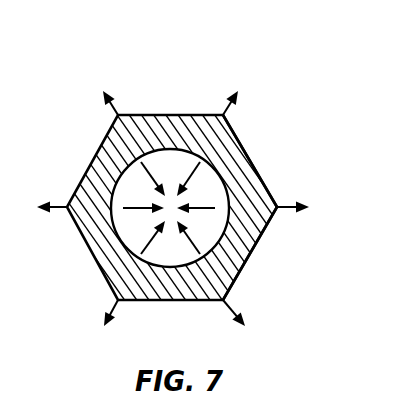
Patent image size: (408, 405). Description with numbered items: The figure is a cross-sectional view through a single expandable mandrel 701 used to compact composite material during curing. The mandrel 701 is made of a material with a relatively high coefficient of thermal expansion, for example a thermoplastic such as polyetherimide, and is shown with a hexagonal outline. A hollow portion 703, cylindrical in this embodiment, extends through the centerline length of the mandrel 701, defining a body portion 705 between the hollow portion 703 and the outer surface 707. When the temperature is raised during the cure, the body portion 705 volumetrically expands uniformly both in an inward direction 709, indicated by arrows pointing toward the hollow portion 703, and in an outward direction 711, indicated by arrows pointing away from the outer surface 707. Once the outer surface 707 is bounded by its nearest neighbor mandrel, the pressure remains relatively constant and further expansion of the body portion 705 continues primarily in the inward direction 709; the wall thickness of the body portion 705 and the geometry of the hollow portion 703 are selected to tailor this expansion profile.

The mandrel 701 is at (126, 72).
The hollow portion 703 is at (123, 228).
The body portion 705 is at (243, 250).
The outer surface 707 is at (262, 181).
The inward direction 709 is at (158, 148).
The outward direction 711 is at (228, 118).